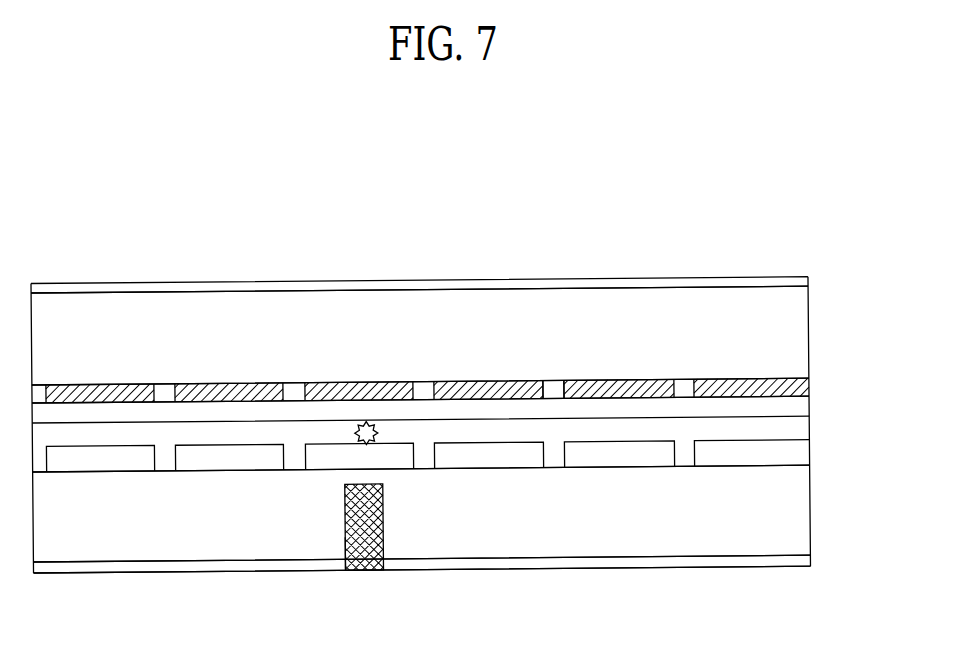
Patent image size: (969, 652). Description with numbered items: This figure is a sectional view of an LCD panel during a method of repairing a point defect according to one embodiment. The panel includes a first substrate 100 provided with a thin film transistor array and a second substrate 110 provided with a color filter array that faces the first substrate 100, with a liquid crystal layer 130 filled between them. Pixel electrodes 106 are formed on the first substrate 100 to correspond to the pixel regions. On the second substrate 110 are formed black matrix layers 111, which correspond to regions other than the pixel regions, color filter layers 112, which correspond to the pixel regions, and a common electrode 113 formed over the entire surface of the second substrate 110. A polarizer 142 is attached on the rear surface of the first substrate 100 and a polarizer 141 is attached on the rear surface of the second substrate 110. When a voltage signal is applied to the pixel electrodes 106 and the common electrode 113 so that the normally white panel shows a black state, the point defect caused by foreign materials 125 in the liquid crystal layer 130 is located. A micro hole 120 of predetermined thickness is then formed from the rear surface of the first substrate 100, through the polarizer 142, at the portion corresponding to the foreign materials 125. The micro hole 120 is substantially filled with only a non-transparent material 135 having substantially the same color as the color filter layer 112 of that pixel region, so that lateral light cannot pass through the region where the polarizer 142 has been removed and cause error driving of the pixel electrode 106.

The first substrate 100 is at (798, 527).
The pixel electrodes 106 is at (798, 462).
The second substrate 110 is at (798, 339).
The black matrix layers 111 is at (555, 392).
The color filter layers 112 is at (798, 392).
The common electrode 113 is at (798, 414).
The micro hole 120 is at (340, 543).
The foreign materials 125 is at (364, 424).
The liquid crystal layer 130 is at (798, 442).
The non-transparent material 135 is at (342, 520).
The polarizer 141 is at (798, 288).
The polarizer 142 is at (798, 570).